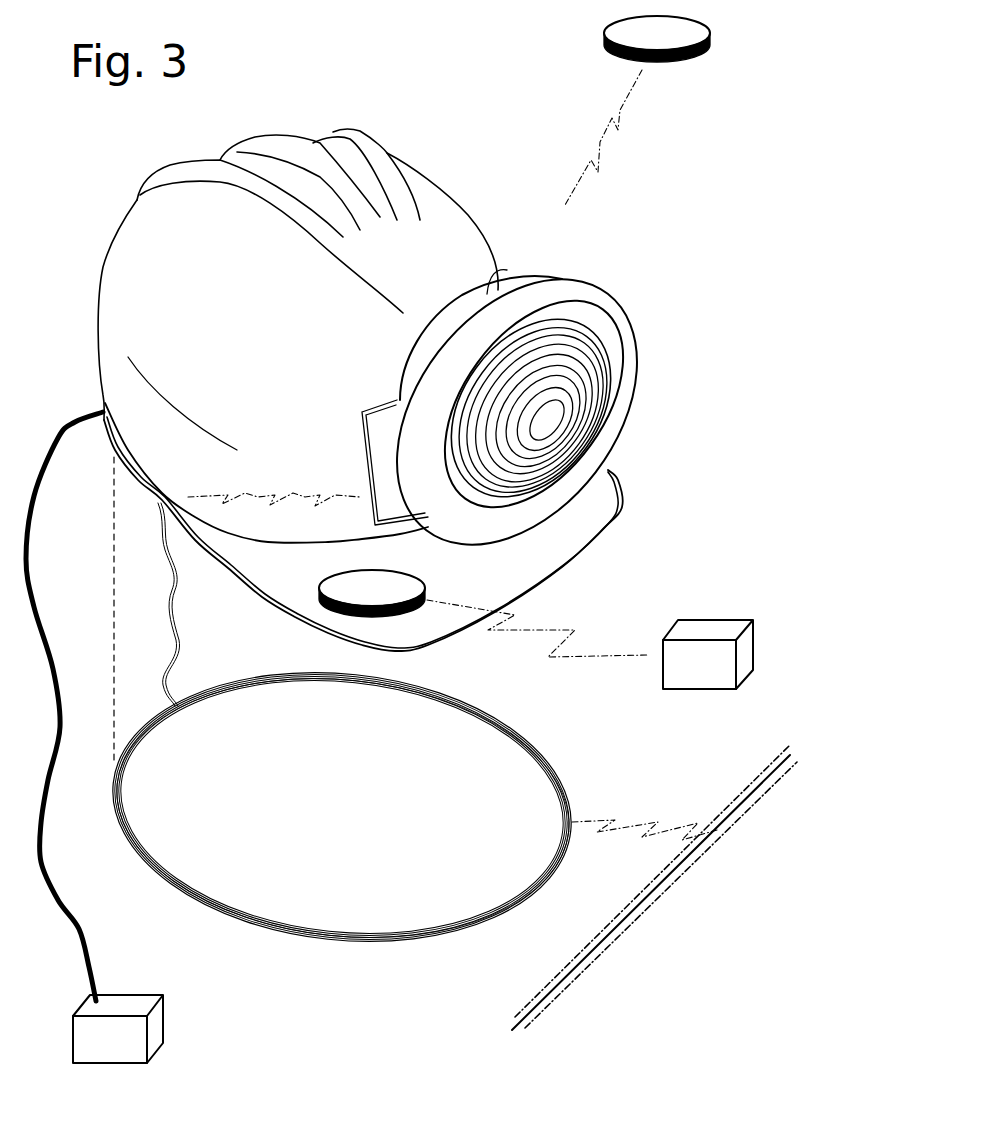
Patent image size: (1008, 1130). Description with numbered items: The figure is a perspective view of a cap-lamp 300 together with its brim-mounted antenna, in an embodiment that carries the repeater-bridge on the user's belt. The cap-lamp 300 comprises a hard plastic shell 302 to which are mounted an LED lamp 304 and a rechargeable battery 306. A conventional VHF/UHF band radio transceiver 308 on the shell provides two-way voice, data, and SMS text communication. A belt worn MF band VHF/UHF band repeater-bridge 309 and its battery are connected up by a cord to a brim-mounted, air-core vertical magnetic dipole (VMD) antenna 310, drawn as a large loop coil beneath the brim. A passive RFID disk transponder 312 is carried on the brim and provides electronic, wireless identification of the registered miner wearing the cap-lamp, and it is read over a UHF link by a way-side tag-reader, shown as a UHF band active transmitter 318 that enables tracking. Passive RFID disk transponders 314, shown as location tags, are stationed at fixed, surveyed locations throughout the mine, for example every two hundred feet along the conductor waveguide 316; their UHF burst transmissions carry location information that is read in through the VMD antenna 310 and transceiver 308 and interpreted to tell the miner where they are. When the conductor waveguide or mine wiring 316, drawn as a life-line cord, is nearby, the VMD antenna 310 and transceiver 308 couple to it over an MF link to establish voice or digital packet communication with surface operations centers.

The cap-lamp 300 is at (387, 76).
The hard plastic shell 302 is at (103, 268).
The LED lamp 304 is at (616, 398).
The rechargeable battery 306 is at (514, 280).
The VHF/UHF band radio transceiver 308 is at (375, 433).
The belt worn MF band VHF/UHF band repeater-bridge 309 is at (184, 1029).
The brim-mounted air-core vertical magnetic dipole (VMD) antenna 310 is at (505, 892).
The passive RFID disk transponder 312 is at (392, 600).
The passive RFID disk transponders 314 is at (676, 44).
The conductor waveguide 316 is at (760, 768).
The way-side UHF band active transmitter 318 is at (711, 636).